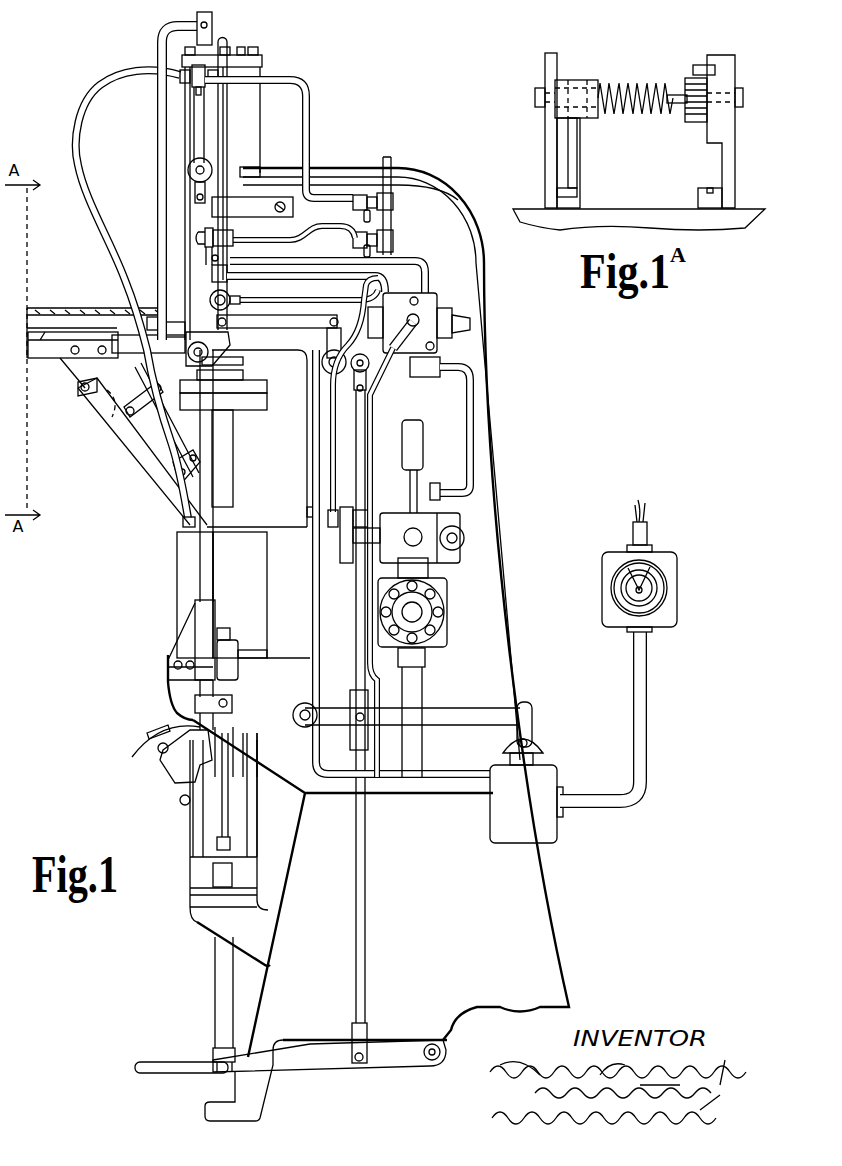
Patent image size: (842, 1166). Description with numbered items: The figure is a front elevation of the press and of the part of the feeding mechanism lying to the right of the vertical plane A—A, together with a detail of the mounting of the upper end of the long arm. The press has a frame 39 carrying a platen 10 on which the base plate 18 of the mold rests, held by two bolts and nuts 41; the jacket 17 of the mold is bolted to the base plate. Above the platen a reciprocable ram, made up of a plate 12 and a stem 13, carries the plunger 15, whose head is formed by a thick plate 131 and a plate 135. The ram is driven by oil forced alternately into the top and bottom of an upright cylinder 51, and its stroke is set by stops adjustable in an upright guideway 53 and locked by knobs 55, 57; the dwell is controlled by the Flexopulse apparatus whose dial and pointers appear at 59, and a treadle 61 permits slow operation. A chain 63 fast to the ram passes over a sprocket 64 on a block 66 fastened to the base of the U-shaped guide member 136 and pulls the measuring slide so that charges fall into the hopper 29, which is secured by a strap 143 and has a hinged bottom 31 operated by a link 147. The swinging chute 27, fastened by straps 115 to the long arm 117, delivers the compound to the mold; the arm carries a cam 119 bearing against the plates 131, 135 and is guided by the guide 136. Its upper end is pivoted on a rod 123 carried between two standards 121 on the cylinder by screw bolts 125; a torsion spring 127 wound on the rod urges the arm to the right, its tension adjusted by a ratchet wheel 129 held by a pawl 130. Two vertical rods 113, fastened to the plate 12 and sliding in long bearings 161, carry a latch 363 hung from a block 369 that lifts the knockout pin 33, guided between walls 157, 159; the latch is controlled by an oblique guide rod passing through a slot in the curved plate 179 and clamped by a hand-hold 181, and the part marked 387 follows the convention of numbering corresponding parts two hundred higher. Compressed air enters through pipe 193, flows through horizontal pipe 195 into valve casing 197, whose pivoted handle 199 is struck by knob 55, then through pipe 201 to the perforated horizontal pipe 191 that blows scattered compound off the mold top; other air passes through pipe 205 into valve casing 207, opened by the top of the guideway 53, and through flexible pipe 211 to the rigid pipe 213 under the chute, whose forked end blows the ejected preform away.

In FIG. 1, the platen 10 is at (180, 690).
In FIG. 1, the plate 12 is at (243, 378).
In FIG. 1, the stem 13 is at (243, 362).
In FIG. 1, the plunger 15 is at (233, 447).
In FIG. 1, the jacket 17 is at (260, 580).
In FIG. 1, the base plate 18 is at (268, 657).
In FIG. 1, the swinging chute 27 is at (120, 430).
In FIG. 1, the hopper 29 is at (87, 332).
In FIG. 1, the hinged bottom 31 is at (80, 393).
In FIG. 1, the knockout pin 33 is at (225, 783).
In FIG. 1, the frame 39 is at (485, 433).
In FIG. 1, the bolts and nuts 41 is at (232, 643).
In FIG. 1, the upright cylinder 51 is at (245, 123).
In FIG. 1A, the upright cylinder 51 is at (740, 222).
In FIG. 1, the upright guideway 53 is at (200, 112).
In FIG. 1, the knob 55 is at (212, 163).
In FIG. 1, the knob 57 is at (208, 350).
In FIG. 1, the dial and pointers 59 is at (677, 563).
In FIG. 1, the treadle 61 is at (168, 1062).
In FIG. 1, the chain 63 is at (55, 312).
In FIG. 1, the sprocket 64 is at (150, 320).
In FIG. 1, the block 66 is at (175, 325).
In FIG. 1, the vertical rods 113 is at (205, 563).
In FIG. 1, the straps 115 is at (138, 408).
In FIG. 1, the long arm 117 is at (157, 57).
In FIG. 1A, the long arm 117 is at (580, 153).
In FIG. 1, the cam 119 is at (183, 430).
In FIG. 1, the upright standards 121 is at (212, 18).
In FIG. 1A, the upright standards 121 is at (550, 163).
In FIG. 1A, the rod 123 is at (592, 92).
In FIG. 1A, the screw bolts 125 is at (535, 97).
In FIG. 1A, the torsion spring 127 is at (632, 82).
In FIG. 1A, the ratchet wheel 129 is at (686, 78).
In FIG. 1A, the pawl 130 is at (700, 65).
In FIG. 1, the thick plate 131 is at (258, 405).
In FIG. 1, the plate 135 is at (262, 392).
In FIG. 1, the U-shaped guide member 136 is at (128, 340).
In FIG. 1, the strap 143 is at (48, 358).
In FIG. 1, the link 147 is at (108, 410).
In FIG. 1, the guideway wall 157 is at (193, 822).
In FIG. 1, the guideway wall 159 is at (248, 838).
In FIG. 1, the long bearings 161 is at (203, 622).
In FIG. 1, the curved plate 179 is at (133, 753).
In FIG. 1, the hand-hold 181 is at (150, 725).
In FIG. 1, the horizontal pipe 191 is at (282, 527).
In FIG. 1, the pipe 193 is at (393, 163).
In FIG. 1, the horizontal pipe 195 is at (323, 237).
In FIG. 1, the valve casing 197 is at (235, 242).
In FIG. 1, the pivoted handle 199 is at (205, 237).
In FIG. 1, the pipe 201 is at (336, 445).
In FIG. 1, the pipe 205 is at (306, 125).
In FIG. 1, the valve casing 207 is at (218, 74).
In FIG. 1, the flexible pipe 211 is at (100, 96).
In FIG. 1, the rigid pipe 213 is at (185, 515).
In FIG. 1, the latch 363 is at (170, 760).
In FIG. 1, the block 369 is at (220, 708).
In FIG. 1, the clamp 387 is at (233, 702).